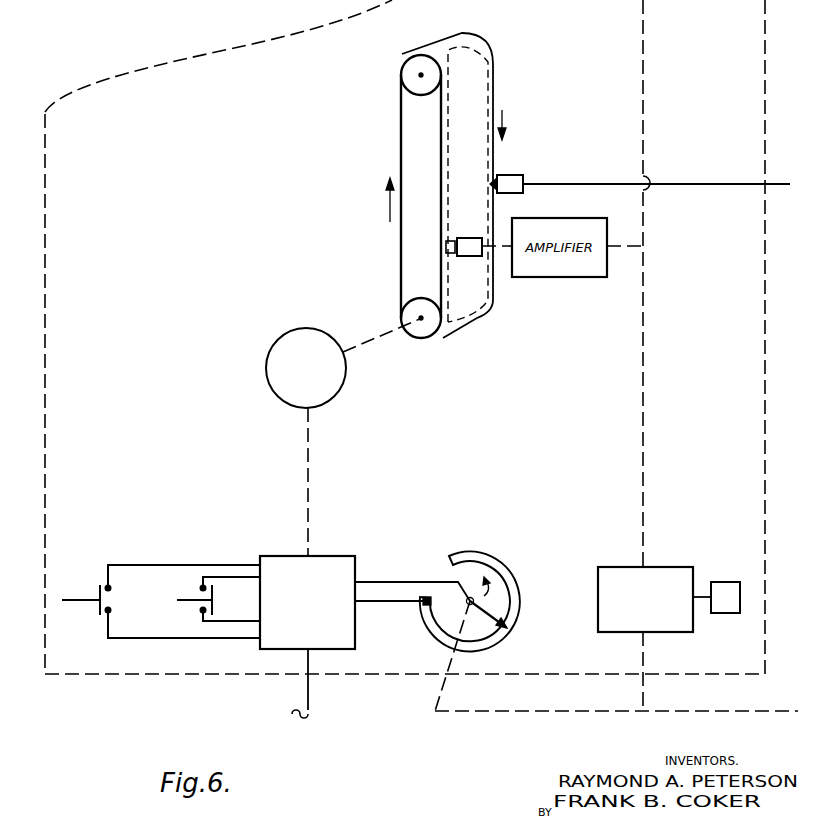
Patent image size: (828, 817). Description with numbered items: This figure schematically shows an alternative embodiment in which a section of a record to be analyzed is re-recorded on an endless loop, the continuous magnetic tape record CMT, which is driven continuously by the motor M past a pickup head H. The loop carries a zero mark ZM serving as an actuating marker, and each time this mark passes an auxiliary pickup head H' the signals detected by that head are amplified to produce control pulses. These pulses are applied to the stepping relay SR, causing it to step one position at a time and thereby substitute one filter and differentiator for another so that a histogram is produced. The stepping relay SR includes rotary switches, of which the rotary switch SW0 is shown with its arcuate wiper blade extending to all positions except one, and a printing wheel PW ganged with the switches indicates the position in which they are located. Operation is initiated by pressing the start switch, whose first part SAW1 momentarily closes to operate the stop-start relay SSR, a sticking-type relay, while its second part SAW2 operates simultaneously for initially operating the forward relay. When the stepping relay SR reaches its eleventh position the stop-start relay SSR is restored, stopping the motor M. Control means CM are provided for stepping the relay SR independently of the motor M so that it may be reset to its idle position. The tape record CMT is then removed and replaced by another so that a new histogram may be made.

The continuous magnetic tape record CMT is at (476, 88).
The pickup head H is at (640, 167).
The auxiliary pickup head H' is at (468, 263).
The zero mark ZM is at (449, 242).
The motor M is at (345, 388).
The stop-start relay SSR is at (355, 620).
The printing wheel PW is at (322, 697).
The first part of start switch SAW1 is at (101, 567).
The second part of start switch SAW2 is at (187, 590).
The rotary switch SW0 is at (446, 566).
The stepping relay SR is at (618, 566).
The control means CM is at (724, 590).